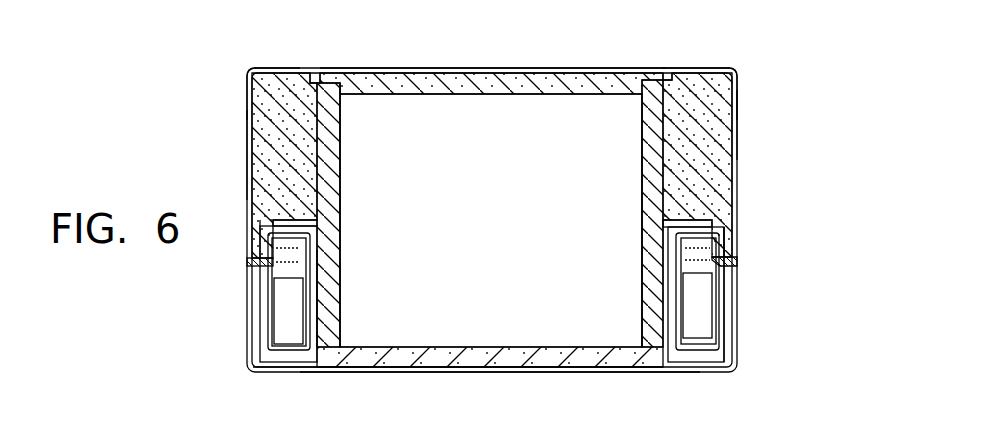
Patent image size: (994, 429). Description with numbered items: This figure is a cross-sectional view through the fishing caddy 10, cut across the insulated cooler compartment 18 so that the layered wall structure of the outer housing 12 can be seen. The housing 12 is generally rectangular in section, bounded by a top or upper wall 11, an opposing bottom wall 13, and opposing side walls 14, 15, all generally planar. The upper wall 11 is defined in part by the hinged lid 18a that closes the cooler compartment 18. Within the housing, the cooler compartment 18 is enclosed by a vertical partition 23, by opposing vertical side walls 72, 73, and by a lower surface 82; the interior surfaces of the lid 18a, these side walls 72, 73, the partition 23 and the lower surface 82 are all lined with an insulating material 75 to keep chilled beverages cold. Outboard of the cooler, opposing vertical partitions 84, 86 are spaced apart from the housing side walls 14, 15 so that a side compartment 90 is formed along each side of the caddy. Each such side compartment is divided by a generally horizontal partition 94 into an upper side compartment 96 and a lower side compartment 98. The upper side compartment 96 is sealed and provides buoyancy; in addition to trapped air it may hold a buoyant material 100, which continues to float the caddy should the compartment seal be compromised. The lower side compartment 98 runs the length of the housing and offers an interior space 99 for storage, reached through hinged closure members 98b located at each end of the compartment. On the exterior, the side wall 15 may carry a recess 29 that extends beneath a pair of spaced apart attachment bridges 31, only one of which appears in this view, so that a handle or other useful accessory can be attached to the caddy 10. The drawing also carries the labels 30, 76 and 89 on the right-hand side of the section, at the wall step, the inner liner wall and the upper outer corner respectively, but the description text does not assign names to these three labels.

The fishing caddy 10 is at (443, 40).
The top or upper wall 11 is at (677, 64).
The outer housing 12 is at (267, 62).
The bottom wall 13 is at (612, 371).
The side wall 14 is at (740, 143).
The side wall 15 is at (247, 100).
The storage compartment 18 is at (497, 112).
The hinged lid 18a is at (582, 64).
The vertical partition 23 is at (404, 324).
The recess 29 is at (260, 200).
The recess 30 is at (737, 207).
The attachment bridge 31 is at (243, 228).
The vertical side wall 72 is at (642, 297).
The vertical side wall 73 is at (343, 282).
The insulating material 75 is at (500, 197).
The inner liner wall 76 is at (642, 240).
The lower surface 82 is at (538, 355).
The vertical partition 84 is at (642, 152).
The vertical partition 86 is at (343, 177).
The outer shell corner 89 is at (740, 74).
The side compartment 90 is at (253, 133).
The horizontal partition 94 is at (343, 197).
The upper side compartment 96 is at (252, 155).
The lower side compartment 98 is at (248, 303).
The hinged closure member 98b is at (262, 335).
The interior space 99 is at (262, 372).
The buoyant material 100 is at (298, 67).